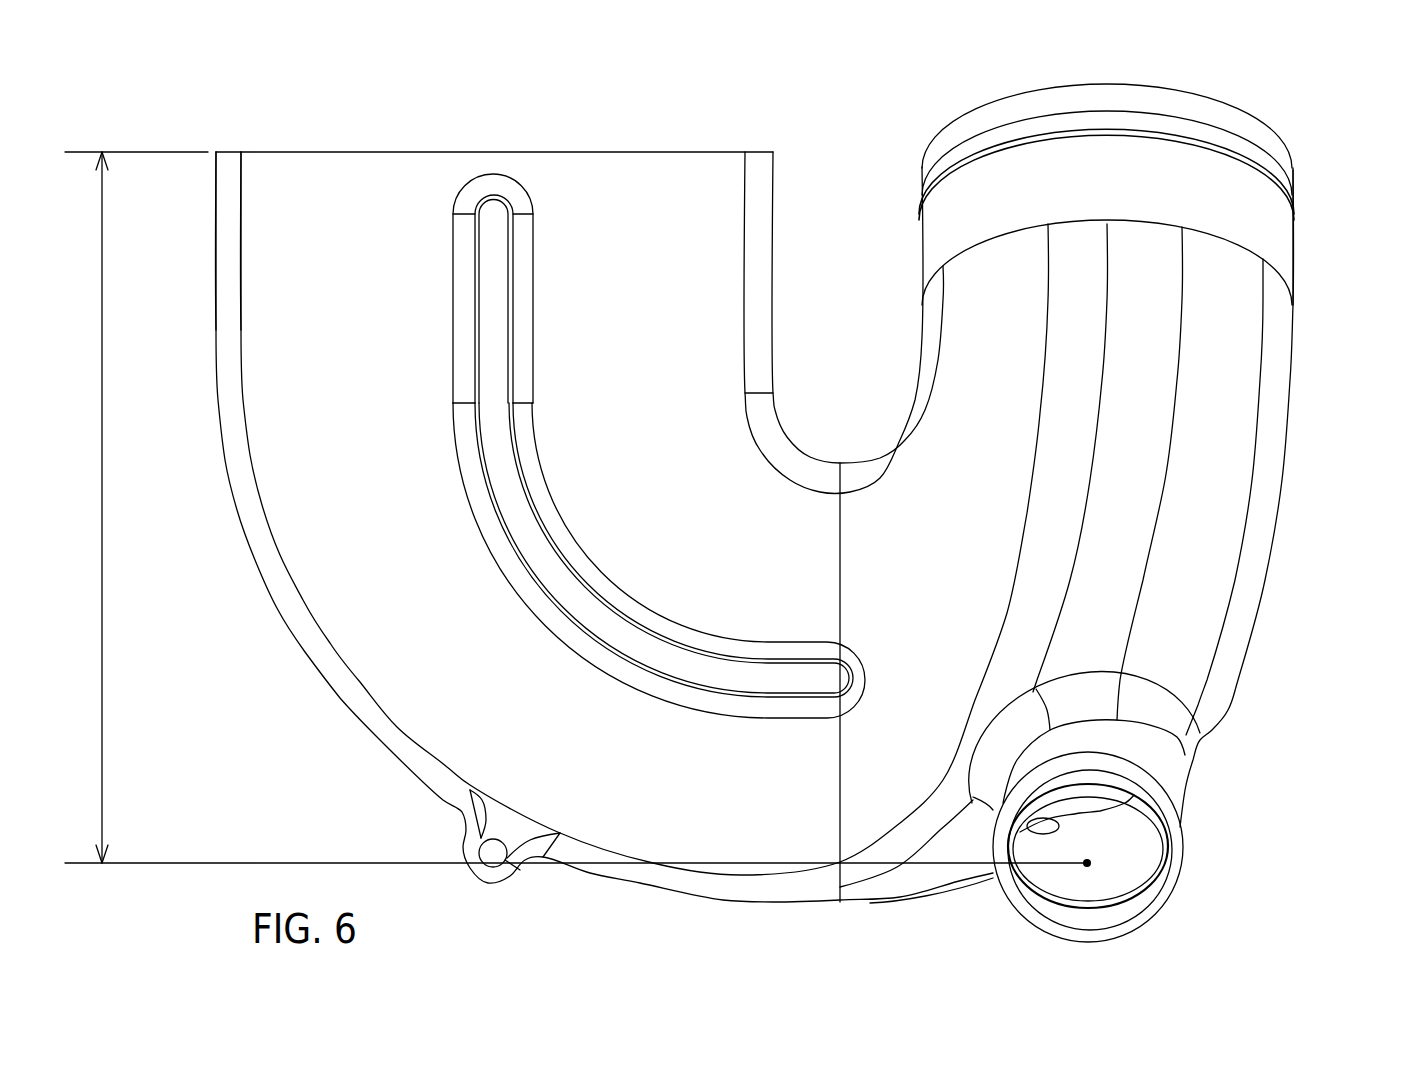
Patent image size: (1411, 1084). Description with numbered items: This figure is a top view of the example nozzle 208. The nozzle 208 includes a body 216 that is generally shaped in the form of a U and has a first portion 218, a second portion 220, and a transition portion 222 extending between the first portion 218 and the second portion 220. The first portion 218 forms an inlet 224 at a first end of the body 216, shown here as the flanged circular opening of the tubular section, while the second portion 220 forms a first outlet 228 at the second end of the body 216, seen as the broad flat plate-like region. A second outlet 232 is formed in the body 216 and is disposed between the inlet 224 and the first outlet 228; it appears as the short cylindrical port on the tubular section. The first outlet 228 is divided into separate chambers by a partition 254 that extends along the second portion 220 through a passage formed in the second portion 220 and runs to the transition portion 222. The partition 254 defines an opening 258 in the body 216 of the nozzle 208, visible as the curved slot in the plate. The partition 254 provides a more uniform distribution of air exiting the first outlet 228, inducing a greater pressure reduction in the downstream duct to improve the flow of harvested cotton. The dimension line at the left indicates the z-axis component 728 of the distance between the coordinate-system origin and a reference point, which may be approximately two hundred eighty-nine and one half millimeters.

The nozzle 208 is at (197, 725).
The body 216 is at (1290, 412).
The first portion 218 is at (1265, 585).
The second portion 220 is at (215, 295).
The transition portion 222 is at (913, 902).
The inlet 224 is at (1045, 87).
The first outlet 228 is at (352, 152).
The second outlet 232 is at (1153, 923).
The partition 254 is at (548, 578).
The opening 258 is at (520, 517).
The z-axis component 728 is at (103, 600).